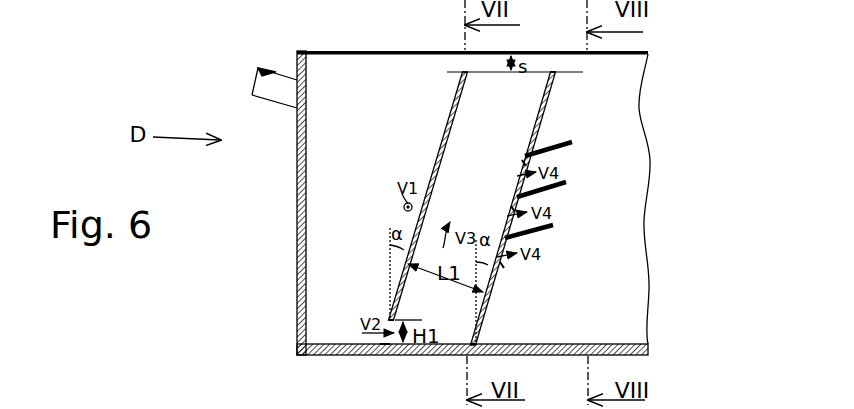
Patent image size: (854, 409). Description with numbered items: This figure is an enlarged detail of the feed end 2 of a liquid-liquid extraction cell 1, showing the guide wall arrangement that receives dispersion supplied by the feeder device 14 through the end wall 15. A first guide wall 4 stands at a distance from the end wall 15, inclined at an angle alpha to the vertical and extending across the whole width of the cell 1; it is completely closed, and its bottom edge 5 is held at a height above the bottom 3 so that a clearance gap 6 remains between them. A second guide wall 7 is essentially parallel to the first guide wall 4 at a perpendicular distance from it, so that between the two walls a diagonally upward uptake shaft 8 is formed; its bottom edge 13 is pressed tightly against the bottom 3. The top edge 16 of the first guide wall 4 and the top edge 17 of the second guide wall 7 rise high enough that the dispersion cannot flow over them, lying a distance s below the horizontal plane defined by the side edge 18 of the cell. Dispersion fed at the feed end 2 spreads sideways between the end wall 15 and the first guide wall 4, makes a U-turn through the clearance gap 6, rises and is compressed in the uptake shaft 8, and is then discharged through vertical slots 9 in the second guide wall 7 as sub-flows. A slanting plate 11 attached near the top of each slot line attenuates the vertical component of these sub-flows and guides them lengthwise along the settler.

The cell 1 is at (634, 100).
The feed end 2 is at (360, 42).
The bottom 3 is at (540, 344).
The first guide wall 4 is at (455, 100).
The bottom edge 5 is at (390, 318).
The clearance gap 6 is at (385, 344).
The second guide wall 7 is at (546, 98).
The uptake shaft 8 is at (456, 212).
The vertical slots 9 is at (524, 163).
The slanting plate 11 is at (572, 142).
The bottom edge 13 is at (476, 345).
The feeder device 14 is at (258, 68).
The end wall 15 is at (306, 172).
The top edge 16 is at (464, 72).
The top edge 17 is at (556, 75).
The side edge 18 is at (331, 51).